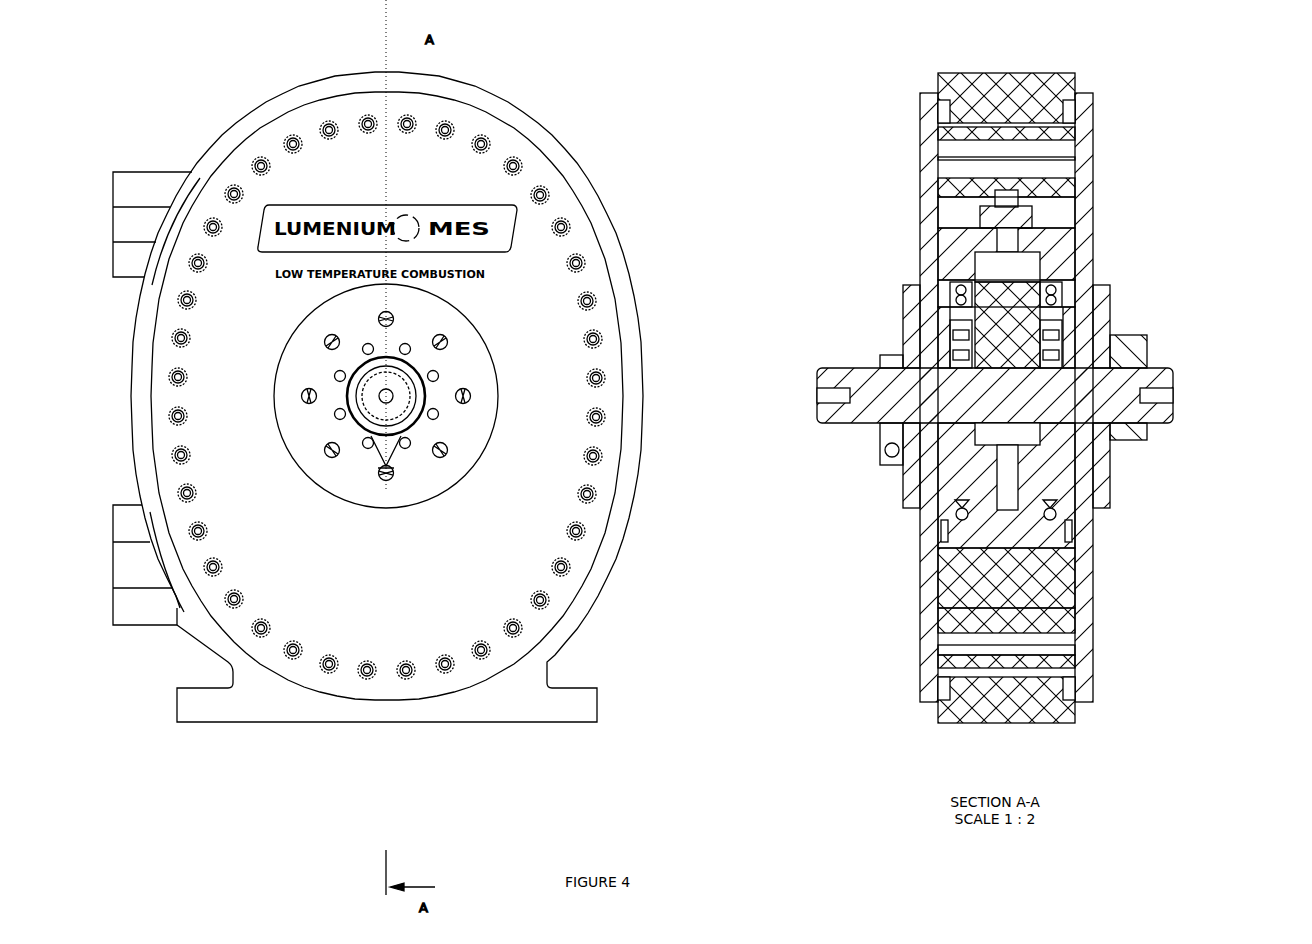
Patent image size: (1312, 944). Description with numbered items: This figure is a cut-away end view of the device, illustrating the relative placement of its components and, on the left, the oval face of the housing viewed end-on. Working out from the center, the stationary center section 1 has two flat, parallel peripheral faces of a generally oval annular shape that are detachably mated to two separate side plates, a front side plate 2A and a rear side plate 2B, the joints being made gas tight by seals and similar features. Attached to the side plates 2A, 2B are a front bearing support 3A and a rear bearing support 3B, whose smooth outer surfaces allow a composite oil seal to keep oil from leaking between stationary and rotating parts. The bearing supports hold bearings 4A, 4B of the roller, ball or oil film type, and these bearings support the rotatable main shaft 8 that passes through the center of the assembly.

The stationary center section 1 is at (1035, 70).
The front side plate 2A is at (914, 696).
The rear side plate 2B is at (1100, 693).
The front bearing support 3A is at (902, 473).
The rear bearing support 3B is at (1110, 490).
The bearing 4A is at (900, 357).
The bearing 4B is at (1115, 355).
The main shaft 8 is at (1175, 423).